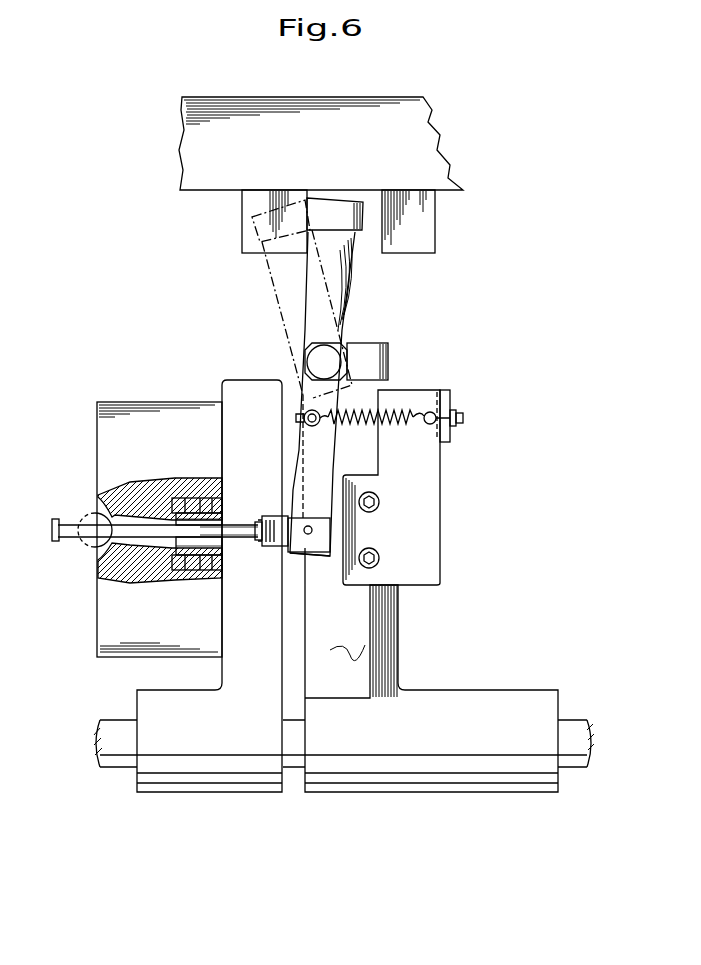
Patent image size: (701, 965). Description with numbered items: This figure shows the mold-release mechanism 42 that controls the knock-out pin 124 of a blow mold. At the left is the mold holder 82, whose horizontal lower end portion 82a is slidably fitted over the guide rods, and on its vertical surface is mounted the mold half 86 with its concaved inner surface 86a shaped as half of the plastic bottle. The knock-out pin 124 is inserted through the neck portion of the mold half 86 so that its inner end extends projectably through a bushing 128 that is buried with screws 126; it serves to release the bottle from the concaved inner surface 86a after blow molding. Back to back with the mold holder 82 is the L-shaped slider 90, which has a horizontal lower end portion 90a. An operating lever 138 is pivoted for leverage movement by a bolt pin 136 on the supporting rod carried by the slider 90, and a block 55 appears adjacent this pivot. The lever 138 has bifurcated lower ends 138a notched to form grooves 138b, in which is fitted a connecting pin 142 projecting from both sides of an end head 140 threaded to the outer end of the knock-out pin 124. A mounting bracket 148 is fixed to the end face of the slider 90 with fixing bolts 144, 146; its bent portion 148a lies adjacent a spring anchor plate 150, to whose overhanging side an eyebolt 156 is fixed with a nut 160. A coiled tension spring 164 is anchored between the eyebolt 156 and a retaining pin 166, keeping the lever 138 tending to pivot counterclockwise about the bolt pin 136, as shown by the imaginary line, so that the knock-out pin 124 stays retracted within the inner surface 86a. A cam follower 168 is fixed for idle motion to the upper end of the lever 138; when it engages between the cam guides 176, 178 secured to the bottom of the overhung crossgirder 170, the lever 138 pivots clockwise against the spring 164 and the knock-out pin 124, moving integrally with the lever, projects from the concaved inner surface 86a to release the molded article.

The overhung crossgirder 170 is at (304, 105).
The cam follower 168 is at (330, 212).
The cam guide 176 is at (250, 205).
The cam guide 178 is at (418, 218).
The operating lever 138 is at (345, 268).
The mold-release mechanism 42 is at (423, 332).
The bolt pin 136 is at (320, 362).
The stop block 55 is at (358, 353).
The mold holder 82 is at (240, 392).
The horizontal lower end portion 82a is at (210, 745).
The L-shaped slider 90 is at (375, 618).
The horizontal lower end portion 90a is at (472, 743).
The mounting bracket 148 is at (427, 478).
The bent portion 148a is at (440, 392).
The spring anchor plate 150 is at (447, 400).
The nut 160 is at (455, 430).
The coiled tension spring 164 is at (390, 410).
The retaining pin 166 is at (308, 418).
The eyebolt 156 is at (430, 425).
The fixing bolt 144 is at (381, 502).
The fixing bolt 146 is at (381, 558).
The mold half 86 is at (115, 597).
The concaved inner surface 86a is at (105, 522).
The knock-out pin 124 is at (144, 530).
The screw 126 is at (195, 560).
The bushing 128 is at (218, 540).
The connecting pin 142 is at (265, 520).
The end head 140 is at (280, 535).
The bifurcated lower ends 138a is at (292, 555).
The grooves 138b is at (305, 560).